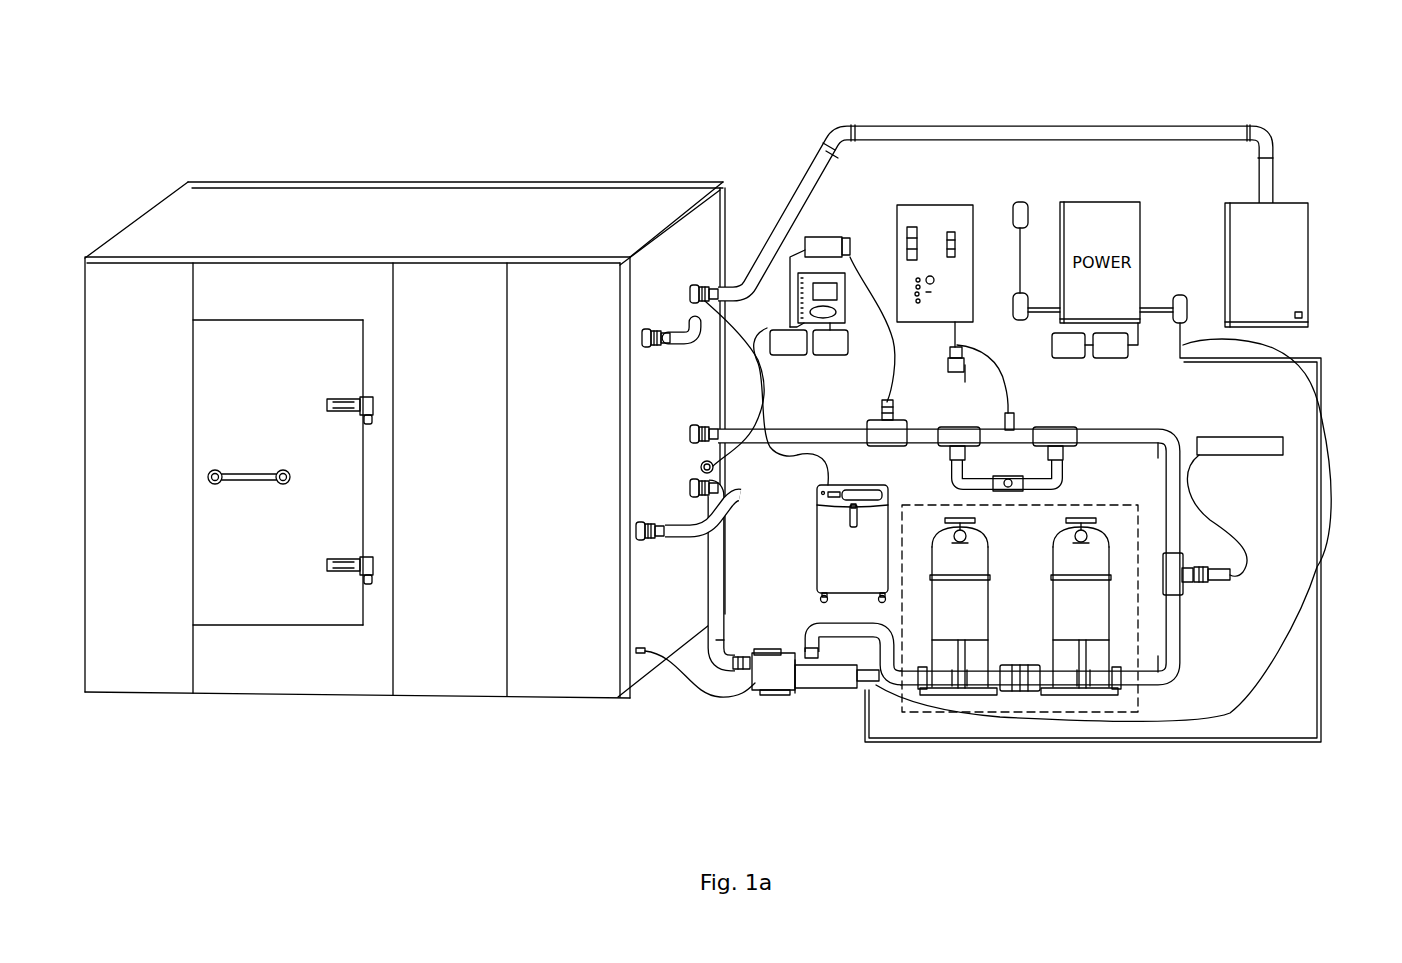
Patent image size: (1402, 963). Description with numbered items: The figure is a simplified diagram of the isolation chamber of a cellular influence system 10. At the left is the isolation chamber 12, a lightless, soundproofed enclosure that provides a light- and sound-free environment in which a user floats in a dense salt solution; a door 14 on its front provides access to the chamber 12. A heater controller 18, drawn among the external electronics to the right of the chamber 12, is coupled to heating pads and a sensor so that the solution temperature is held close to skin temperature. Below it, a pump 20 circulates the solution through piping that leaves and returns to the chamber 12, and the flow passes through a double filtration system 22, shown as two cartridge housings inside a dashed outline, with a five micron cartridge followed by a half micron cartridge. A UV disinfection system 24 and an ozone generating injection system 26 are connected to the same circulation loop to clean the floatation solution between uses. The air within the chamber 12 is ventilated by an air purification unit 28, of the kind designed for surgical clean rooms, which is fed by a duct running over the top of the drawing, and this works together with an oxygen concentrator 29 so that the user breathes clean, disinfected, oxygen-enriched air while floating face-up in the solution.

The cellular influence system 10 is at (1281, 68).
The isolation chamber 12 is at (213, 181).
The door 14 is at (258, 583).
The heater controller 18 is at (817, 273).
The pump 20 is at (777, 695).
The double filtration system 22 is at (1078, 505).
The UV disinfection system 24 is at (1225, 437).
The ozone generating injection system 26 is at (937, 203).
The air purification unit 28 is at (1280, 203).
The oxygen concentrator 29 is at (817, 533).